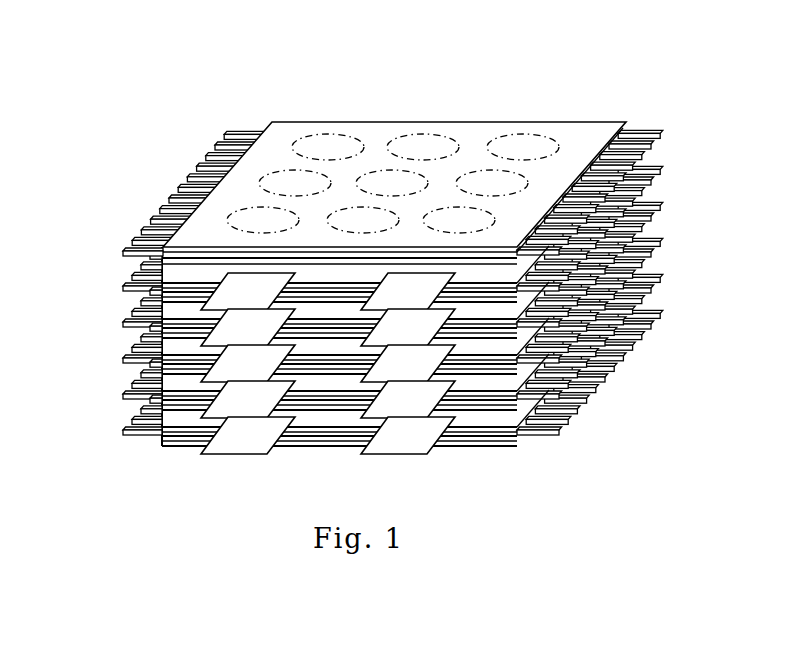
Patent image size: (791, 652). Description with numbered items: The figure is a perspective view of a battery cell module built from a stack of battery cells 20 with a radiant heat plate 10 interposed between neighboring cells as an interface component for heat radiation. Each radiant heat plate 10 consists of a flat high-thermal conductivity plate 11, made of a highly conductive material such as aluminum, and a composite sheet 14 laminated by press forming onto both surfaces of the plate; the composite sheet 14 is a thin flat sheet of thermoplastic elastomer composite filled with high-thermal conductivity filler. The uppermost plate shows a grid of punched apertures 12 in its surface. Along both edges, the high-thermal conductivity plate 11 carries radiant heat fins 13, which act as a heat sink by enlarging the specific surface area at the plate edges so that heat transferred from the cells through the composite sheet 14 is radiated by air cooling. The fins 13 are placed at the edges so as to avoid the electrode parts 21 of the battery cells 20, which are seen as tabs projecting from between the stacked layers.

The radiant heat plate 10 is at (334, 110).
The high-thermal conductivity plate 11 is at (626, 122).
The punched aperture 12 is at (516, 135).
The radiant heat fin 13 is at (661, 126).
The composite sheet 14 is at (580, 138).
The battery cell 20 is at (164, 278).
The electrode part 21 is at (224, 300).